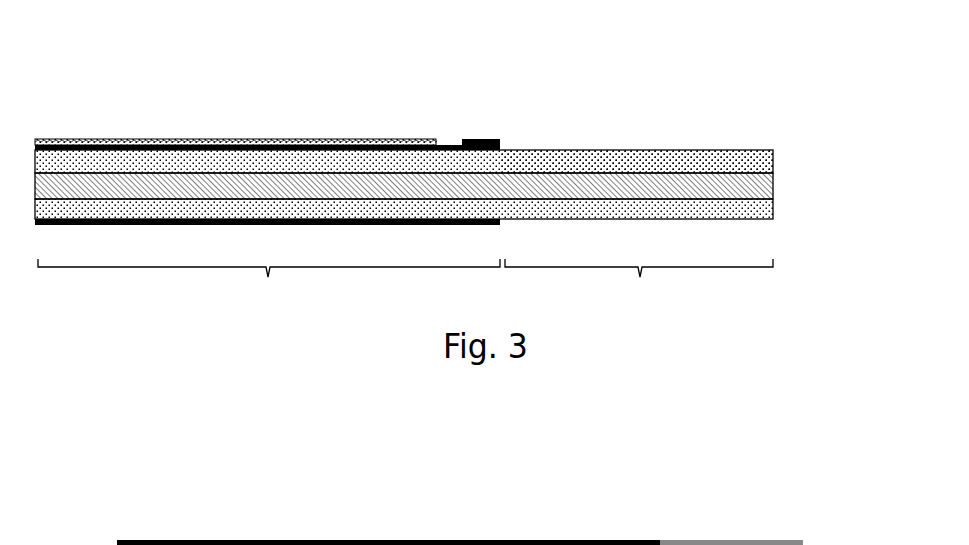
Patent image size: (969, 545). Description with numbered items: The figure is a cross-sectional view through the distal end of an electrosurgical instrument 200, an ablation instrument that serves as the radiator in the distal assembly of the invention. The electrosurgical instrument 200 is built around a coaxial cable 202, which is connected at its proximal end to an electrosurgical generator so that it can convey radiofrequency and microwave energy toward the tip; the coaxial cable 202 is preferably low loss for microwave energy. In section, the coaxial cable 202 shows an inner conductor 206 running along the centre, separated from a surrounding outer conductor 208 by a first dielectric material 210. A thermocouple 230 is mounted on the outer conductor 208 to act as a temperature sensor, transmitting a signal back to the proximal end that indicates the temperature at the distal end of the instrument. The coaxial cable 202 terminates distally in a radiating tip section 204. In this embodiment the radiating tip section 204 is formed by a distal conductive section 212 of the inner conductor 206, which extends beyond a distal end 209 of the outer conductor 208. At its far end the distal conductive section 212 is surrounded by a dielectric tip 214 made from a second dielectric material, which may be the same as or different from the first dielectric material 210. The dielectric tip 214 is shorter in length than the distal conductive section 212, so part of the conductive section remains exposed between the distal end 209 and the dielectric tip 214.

The electrosurgical instrument 200 is at (406, 170).
The coaxial cable 202 is at (269, 287).
The radiating tip section 204 is at (639, 284).
The inner conductor 206 is at (112, 187).
The outer conductor 208 is at (190, 226).
The distal end of the outer conductor 209 is at (502, 140).
The first dielectric material 210 is at (172, 158).
The distal conductive section 212 is at (705, 178).
The dielectric tip 214 is at (560, 158).
The thermocouple 230 is at (258, 140).